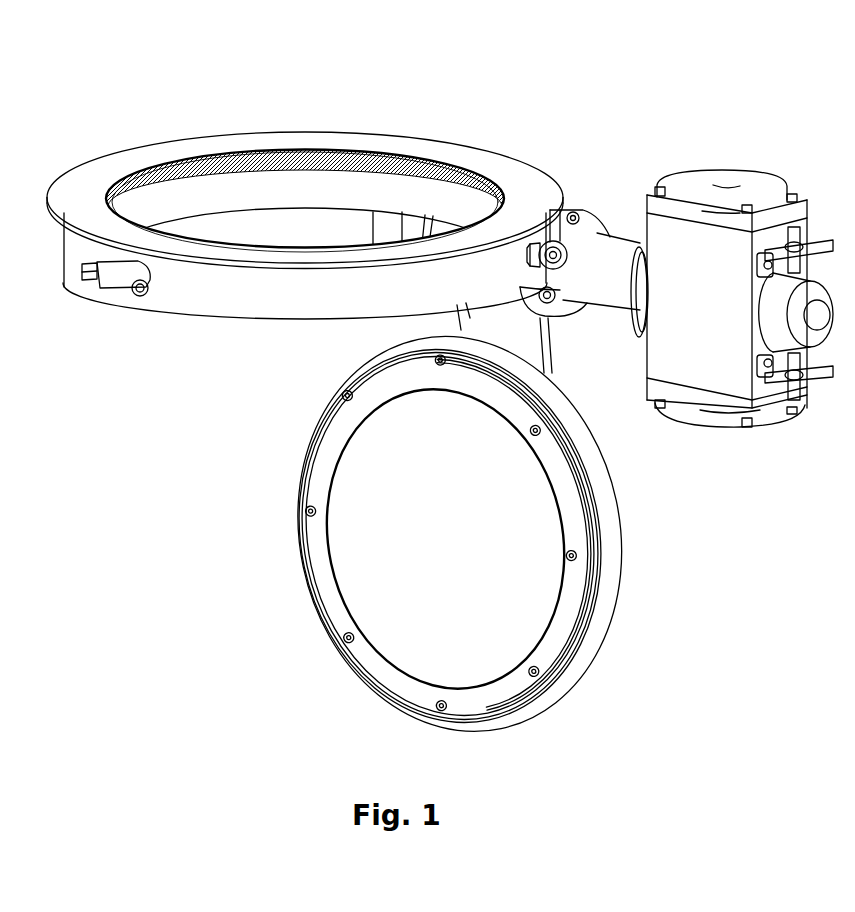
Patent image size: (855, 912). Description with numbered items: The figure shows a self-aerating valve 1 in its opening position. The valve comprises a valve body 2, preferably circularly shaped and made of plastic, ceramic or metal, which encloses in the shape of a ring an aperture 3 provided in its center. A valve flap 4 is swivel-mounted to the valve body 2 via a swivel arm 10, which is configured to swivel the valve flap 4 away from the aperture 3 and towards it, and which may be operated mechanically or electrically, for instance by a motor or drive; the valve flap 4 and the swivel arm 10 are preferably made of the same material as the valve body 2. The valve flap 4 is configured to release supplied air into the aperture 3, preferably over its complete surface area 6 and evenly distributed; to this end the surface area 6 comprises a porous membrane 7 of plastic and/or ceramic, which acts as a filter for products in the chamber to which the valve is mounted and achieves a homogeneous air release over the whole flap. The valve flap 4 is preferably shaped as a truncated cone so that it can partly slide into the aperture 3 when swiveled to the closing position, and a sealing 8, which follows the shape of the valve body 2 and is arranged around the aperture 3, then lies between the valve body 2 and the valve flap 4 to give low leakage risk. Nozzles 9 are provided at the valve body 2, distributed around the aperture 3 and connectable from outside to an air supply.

The self-aerating valve 1 is at (140, 52).
The valve body 2 is at (342, 130).
The aperture 3 is at (268, 228).
The valve flap 4 is at (607, 523).
The surface area 6 is at (337, 420).
The porous membrane 7 is at (405, 527).
The sealing 8 is at (585, 602).
The nozzles 9 is at (563, 247).
The swivel arm 10 is at (522, 325).